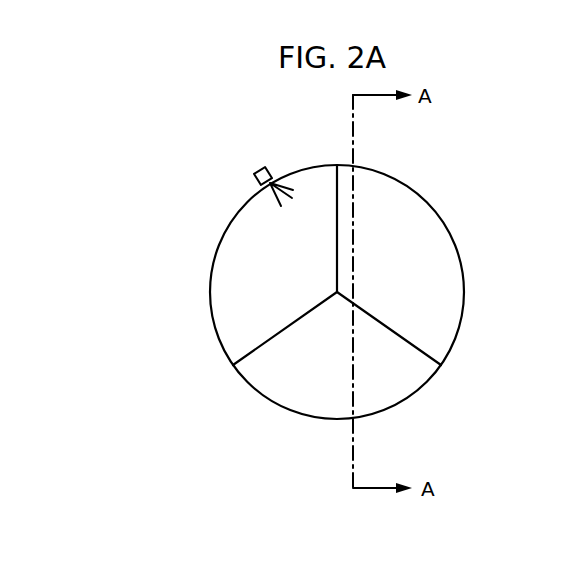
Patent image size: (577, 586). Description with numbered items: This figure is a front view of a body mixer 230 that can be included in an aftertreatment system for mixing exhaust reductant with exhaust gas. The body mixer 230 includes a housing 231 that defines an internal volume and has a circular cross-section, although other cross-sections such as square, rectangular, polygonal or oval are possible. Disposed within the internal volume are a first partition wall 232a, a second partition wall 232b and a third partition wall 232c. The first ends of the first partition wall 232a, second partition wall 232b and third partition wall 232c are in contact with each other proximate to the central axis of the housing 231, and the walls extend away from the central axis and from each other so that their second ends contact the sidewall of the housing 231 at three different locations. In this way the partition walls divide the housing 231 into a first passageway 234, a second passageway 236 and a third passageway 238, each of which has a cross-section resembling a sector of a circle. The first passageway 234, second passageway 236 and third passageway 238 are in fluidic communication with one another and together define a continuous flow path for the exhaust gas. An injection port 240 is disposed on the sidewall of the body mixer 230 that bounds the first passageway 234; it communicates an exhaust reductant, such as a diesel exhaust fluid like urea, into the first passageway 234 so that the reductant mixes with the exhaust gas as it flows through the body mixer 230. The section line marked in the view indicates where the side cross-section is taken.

The body mixer 230 is at (224, 174).
The housing 231 is at (232, 211).
The first passageway 234 is at (236, 259).
The first partition wall 232a is at (256, 354).
The second partition wall 232b is at (340, 186).
The third partition wall 232c is at (427, 348).
The second passageway 236 is at (447, 265).
The third passageway 238 is at (356, 406).
The injection port 240 is at (270, 168).